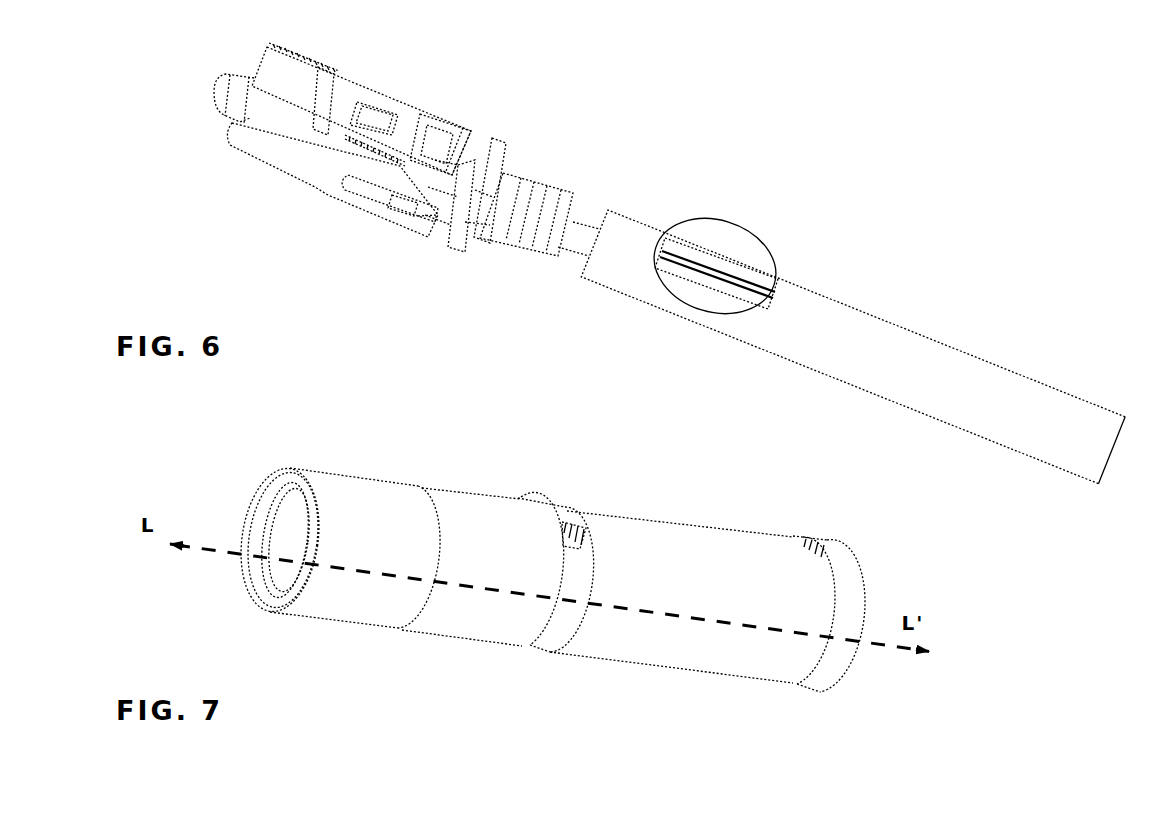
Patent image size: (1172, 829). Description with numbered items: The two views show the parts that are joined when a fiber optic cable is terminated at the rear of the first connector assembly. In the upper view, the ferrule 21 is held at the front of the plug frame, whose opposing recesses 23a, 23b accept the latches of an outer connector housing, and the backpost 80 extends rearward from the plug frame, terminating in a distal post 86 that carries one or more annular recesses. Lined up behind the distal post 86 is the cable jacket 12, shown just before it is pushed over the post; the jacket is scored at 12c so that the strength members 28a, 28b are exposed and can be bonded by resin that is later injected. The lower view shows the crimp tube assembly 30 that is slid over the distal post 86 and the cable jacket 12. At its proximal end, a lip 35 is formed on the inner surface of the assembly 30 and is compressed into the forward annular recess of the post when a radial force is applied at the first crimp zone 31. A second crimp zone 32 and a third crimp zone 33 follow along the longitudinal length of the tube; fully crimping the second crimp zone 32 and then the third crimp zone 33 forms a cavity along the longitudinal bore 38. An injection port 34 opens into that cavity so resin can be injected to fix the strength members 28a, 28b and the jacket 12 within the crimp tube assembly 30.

In FIG. 6, the cable jacket 12 is at (853, 314).
In FIG. 6, the scoring 12c is at (760, 236).
In FIG. 6, the ferrule 21 is at (228, 97).
In FIG. 6, the recess 23a is at (332, 102).
In FIG. 6, the recess 23b is at (310, 190).
In FIG. 6, the strength member 28a is at (697, 260).
In FIG. 6, the strength member 28b is at (697, 260).
In FIG. 6, the backpost 80 is at (512, 195).
In FIG. 6, the distal post 86 is at (497, 227).
In FIG. 7, the crimp tube assembly 30 is at (663, 595).
In FIG. 7, the first crimp zone 31 is at (293, 502).
In FIG. 7, the second crimp zone 32 is at (513, 524).
In FIG. 7, the third crimp zone 33 is at (670, 668).
In FIG. 7, the injection port 34 is at (573, 538).
In FIG. 7, the lip 35 is at (257, 570).
In FIG. 7, the longitudinal bore 38 is at (287, 530).